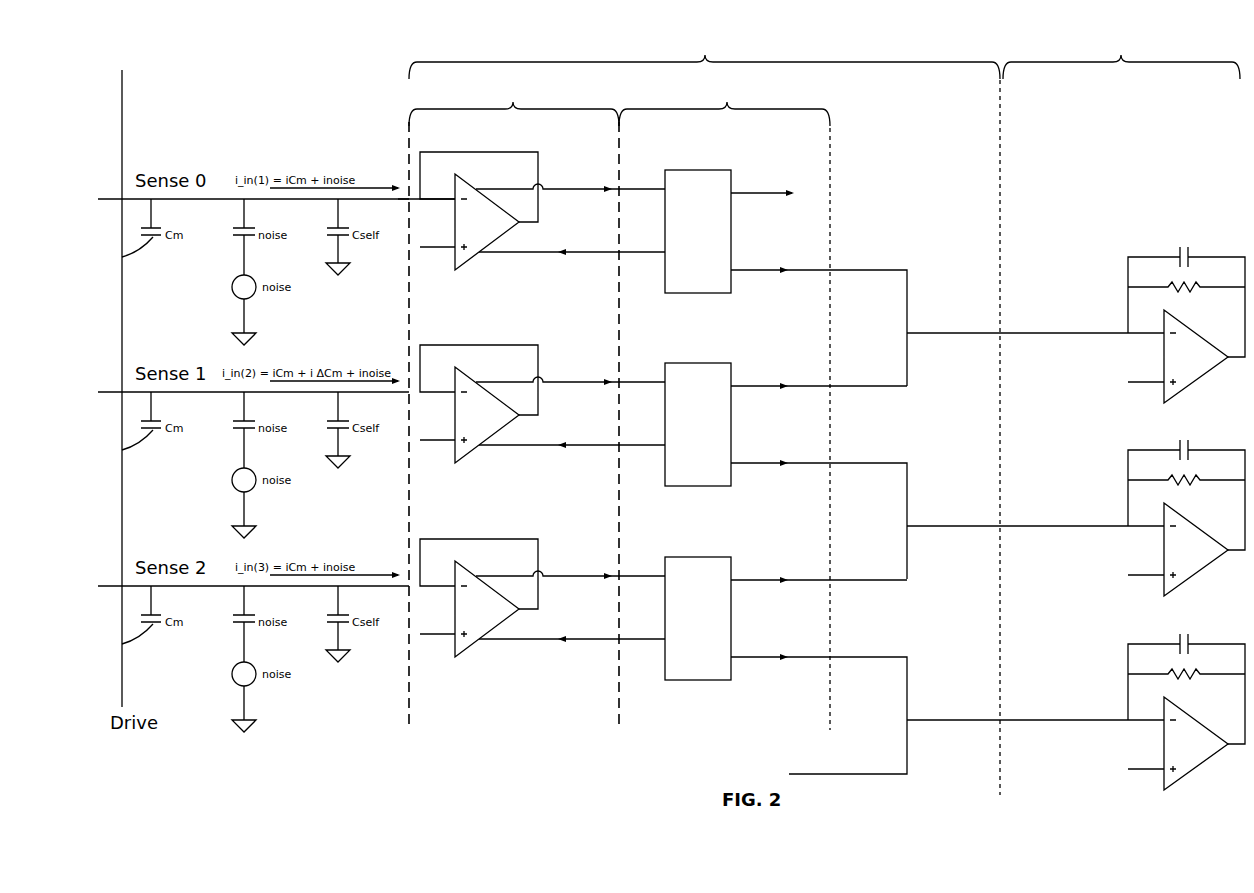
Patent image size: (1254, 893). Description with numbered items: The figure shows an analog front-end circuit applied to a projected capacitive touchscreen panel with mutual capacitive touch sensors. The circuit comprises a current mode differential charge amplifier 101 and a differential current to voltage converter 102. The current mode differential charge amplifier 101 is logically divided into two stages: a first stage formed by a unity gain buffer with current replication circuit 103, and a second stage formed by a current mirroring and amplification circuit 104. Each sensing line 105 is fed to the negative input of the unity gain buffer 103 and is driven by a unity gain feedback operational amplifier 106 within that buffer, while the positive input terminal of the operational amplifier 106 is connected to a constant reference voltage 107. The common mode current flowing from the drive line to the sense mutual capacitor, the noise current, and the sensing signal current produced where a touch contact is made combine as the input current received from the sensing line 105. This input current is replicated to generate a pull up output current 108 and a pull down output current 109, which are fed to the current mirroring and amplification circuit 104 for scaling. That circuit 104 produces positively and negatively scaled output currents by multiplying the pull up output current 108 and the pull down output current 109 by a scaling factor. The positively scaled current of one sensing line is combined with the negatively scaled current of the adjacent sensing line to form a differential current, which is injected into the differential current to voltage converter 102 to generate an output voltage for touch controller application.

The current mode differential charge amplifier 101 is at (682, 414).
The differential current to voltage converter 102 is at (1076, 412).
The unity gain buffer with current replication circuit 103 is at (517, 368).
The current mirroring and amplification circuit 104 is at (763, 427).
The sensing line 105 is at (407, 196).
The unity gain feedback operational amplifier 106 is at (464, 262).
The constant reference voltage 107 is at (407, 264).
The pull up output current 108 is at (620, 170).
The pull down output current 109 is at (589, 262).